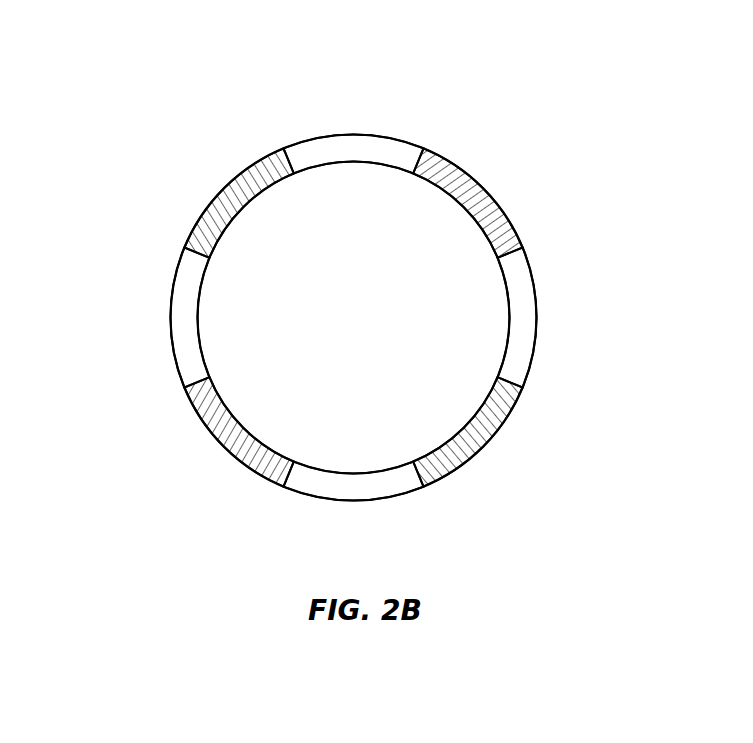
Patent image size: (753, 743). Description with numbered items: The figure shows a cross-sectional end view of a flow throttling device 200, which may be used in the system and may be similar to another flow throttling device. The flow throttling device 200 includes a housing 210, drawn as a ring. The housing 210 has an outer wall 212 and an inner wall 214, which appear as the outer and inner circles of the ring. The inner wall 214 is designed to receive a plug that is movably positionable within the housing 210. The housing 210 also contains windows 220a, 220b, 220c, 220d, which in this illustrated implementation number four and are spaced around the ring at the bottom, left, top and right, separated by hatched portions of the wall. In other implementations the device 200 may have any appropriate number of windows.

The flow throttling device 200 is at (358, 290).
The housing 210 is at (500, 202).
The outer wall 212 is at (515, 236).
The inner wall 214 is at (483, 238).
The window 220a is at (353, 507).
The window 220b is at (163, 325).
The window 220c is at (353, 123).
The window 220d is at (545, 320).